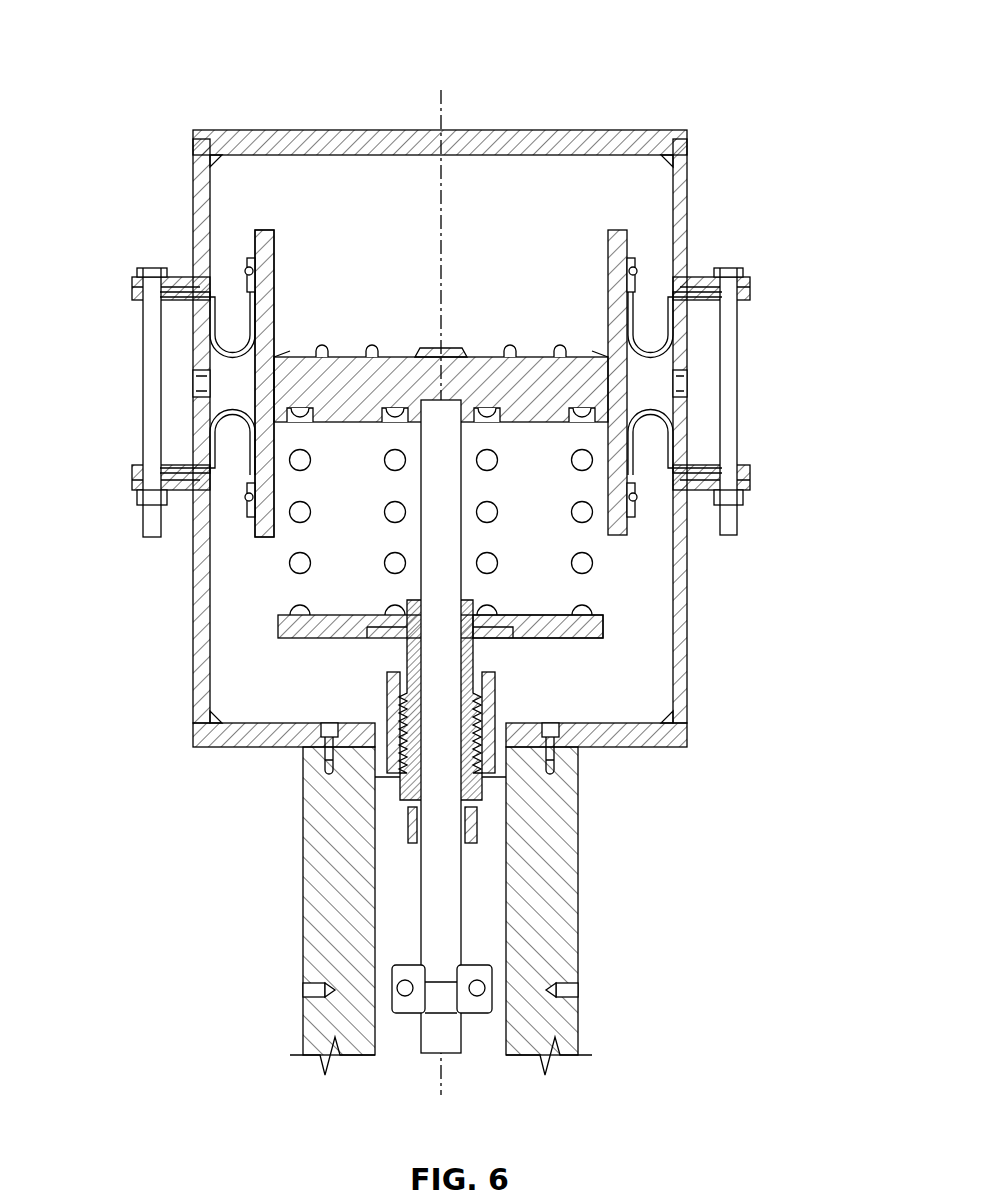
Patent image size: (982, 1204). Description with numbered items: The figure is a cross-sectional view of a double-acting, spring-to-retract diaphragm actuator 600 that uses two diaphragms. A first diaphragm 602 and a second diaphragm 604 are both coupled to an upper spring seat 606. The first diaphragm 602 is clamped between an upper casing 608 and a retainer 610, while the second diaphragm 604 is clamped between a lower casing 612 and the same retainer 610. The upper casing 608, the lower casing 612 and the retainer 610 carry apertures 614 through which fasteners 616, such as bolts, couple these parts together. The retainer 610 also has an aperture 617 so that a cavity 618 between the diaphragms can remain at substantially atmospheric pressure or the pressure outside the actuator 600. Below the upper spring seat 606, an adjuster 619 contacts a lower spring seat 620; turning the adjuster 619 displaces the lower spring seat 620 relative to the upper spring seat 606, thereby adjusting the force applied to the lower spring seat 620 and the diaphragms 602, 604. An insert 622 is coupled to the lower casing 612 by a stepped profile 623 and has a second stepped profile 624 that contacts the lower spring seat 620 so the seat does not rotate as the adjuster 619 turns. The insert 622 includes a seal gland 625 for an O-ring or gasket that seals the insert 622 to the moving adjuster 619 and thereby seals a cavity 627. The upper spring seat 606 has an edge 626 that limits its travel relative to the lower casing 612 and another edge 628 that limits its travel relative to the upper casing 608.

The diaphragm actuator 600 is at (188, 44).
The first diaphragm 602 is at (680, 383).
The second diaphragm 604 is at (653, 420).
The upper spring seat 606 is at (420, 345).
The upper casing 608 is at (278, 150).
The retainer 610 is at (680, 340).
The lower casing 612 is at (598, 728).
The apertures 614 is at (133, 290).
The fasteners 616 is at (730, 268).
The aperture 617 is at (200, 388).
The cavity 618 is at (230, 370).
The adjuster 619 is at (398, 648).
The lower spring seat 620 is at (292, 628).
The insert 622 is at (493, 700).
The stepped profile 623 is at (497, 775).
The second stepped profile 624 is at (510, 622).
The seal gland 625 is at (393, 672).
The edge 626 is at (262, 540).
The cavity 627 is at (555, 507).
The edge 628 is at (262, 228).